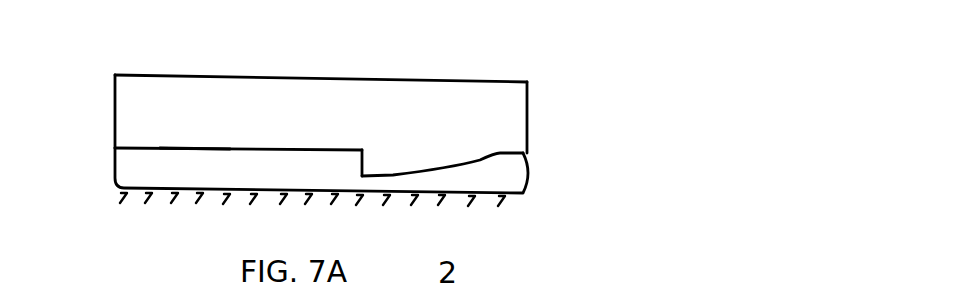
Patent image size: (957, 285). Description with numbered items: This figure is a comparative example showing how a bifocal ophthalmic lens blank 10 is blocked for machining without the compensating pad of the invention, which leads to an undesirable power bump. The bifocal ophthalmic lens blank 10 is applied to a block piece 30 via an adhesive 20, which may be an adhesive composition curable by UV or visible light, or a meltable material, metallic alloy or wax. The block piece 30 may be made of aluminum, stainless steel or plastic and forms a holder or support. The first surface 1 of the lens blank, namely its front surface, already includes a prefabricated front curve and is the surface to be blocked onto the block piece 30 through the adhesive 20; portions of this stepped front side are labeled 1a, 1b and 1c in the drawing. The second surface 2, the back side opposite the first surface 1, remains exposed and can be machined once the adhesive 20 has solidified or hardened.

The second surface 2 is at (463, 81).
The bifocal ophthalmic lens blank 10 is at (507, 122).
The adhesive 20 is at (517, 173).
The block piece 30 is at (507, 205).
The first surface 1 is at (143, 148).
The recessed bottom surface 1a is at (395, 172).
The step side surface 1b is at (358, 160).
The upper surface 1c is at (193, 148).